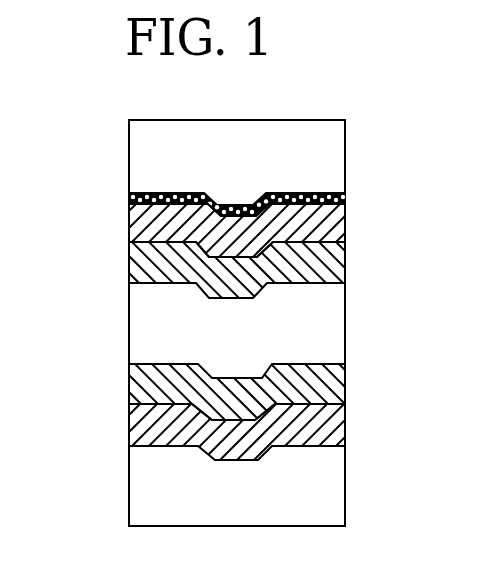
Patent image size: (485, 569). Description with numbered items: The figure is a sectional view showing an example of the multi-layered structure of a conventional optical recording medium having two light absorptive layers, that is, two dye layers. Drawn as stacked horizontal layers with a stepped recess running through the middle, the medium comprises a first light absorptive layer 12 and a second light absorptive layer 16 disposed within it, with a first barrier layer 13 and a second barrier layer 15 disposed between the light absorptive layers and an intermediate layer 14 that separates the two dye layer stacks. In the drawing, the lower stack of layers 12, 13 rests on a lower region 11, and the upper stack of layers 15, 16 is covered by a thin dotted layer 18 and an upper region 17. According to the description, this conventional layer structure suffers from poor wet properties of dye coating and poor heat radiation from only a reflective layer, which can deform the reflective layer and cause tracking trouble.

The substrate 11 is at (337, 495).
The first light absorptive layer 12 is at (337, 428).
The first barrier layer 13 is at (337, 390).
The intermediate layer 14 is at (335, 332).
The second barrier layer 15 is at (337, 262).
The second light absorptive layer 16 is at (337, 220).
The top layer 17 is at (337, 173).
The dotted thin film layer 18 is at (128, 197).